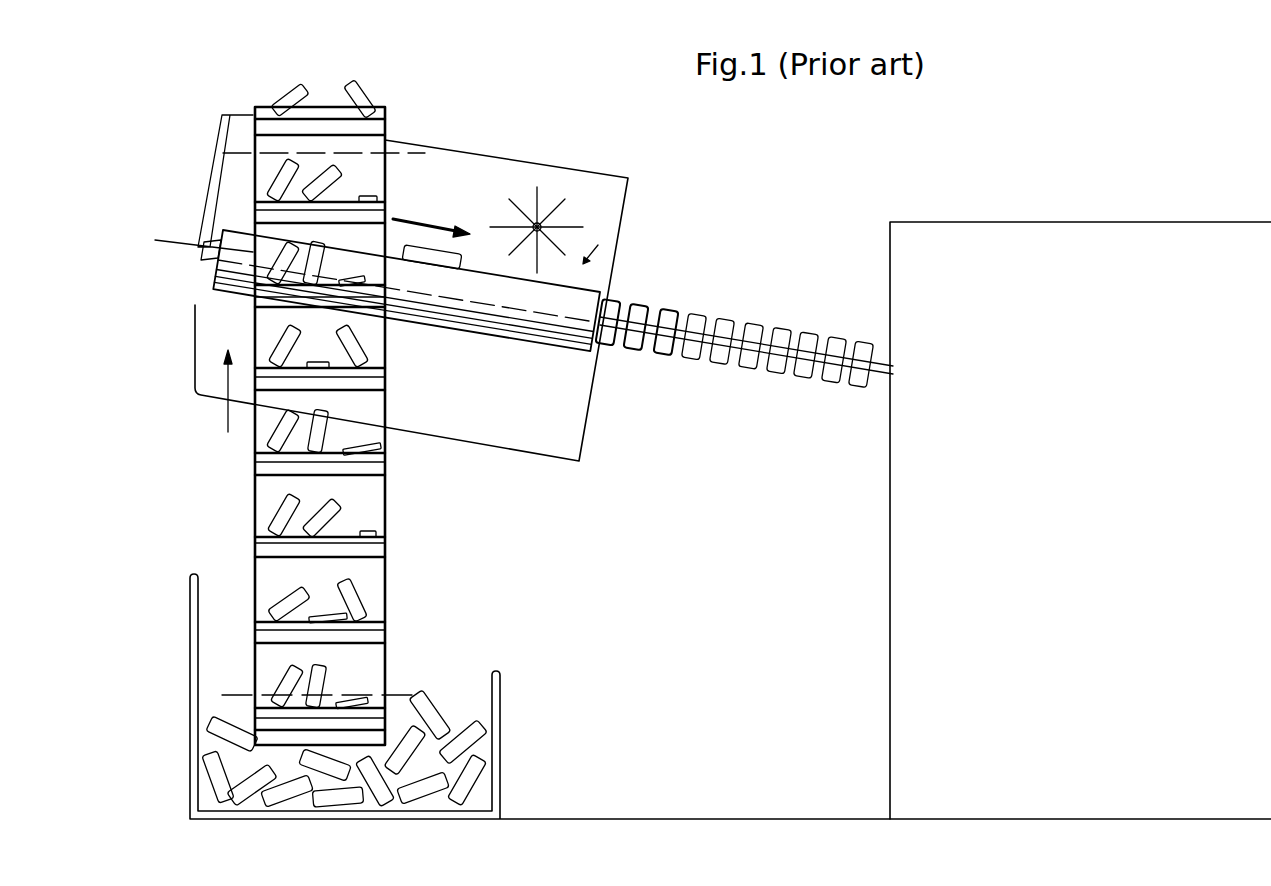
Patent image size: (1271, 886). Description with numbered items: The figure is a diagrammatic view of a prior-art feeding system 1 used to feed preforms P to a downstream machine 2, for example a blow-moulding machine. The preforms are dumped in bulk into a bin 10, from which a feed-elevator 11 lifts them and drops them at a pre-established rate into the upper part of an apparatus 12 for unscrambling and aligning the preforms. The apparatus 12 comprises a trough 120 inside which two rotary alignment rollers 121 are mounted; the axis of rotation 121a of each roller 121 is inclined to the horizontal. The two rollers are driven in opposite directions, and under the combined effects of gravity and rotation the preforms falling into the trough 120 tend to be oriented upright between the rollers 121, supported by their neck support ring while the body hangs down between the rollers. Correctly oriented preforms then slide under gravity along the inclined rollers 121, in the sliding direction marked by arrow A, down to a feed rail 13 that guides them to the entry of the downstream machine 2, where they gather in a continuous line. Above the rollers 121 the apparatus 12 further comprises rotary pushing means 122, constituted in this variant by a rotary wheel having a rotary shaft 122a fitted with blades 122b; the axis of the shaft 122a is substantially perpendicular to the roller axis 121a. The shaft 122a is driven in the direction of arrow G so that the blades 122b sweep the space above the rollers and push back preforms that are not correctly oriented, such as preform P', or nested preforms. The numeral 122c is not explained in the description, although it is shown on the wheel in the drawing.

The feeding system 1 is at (525, 123).
The downstream machine 2 is at (1117, 480).
The bin 10 is at (497, 692).
The feed-elevator 11 is at (390, 526).
The apparatus for unscrambling and aligning the preforms 12 is at (427, 128).
The feed rail 13 is at (735, 338).
The trough 120 is at (610, 192).
The rotary alignment rollers 121 is at (457, 320).
The axis of rotation 121a is at (213, 260).
The rotary pushing means 122 is at (547, 190).
The rotary shaft 122a is at (548, 224).
The blades 122b is at (509, 198).
The blade 122c is at (552, 211).